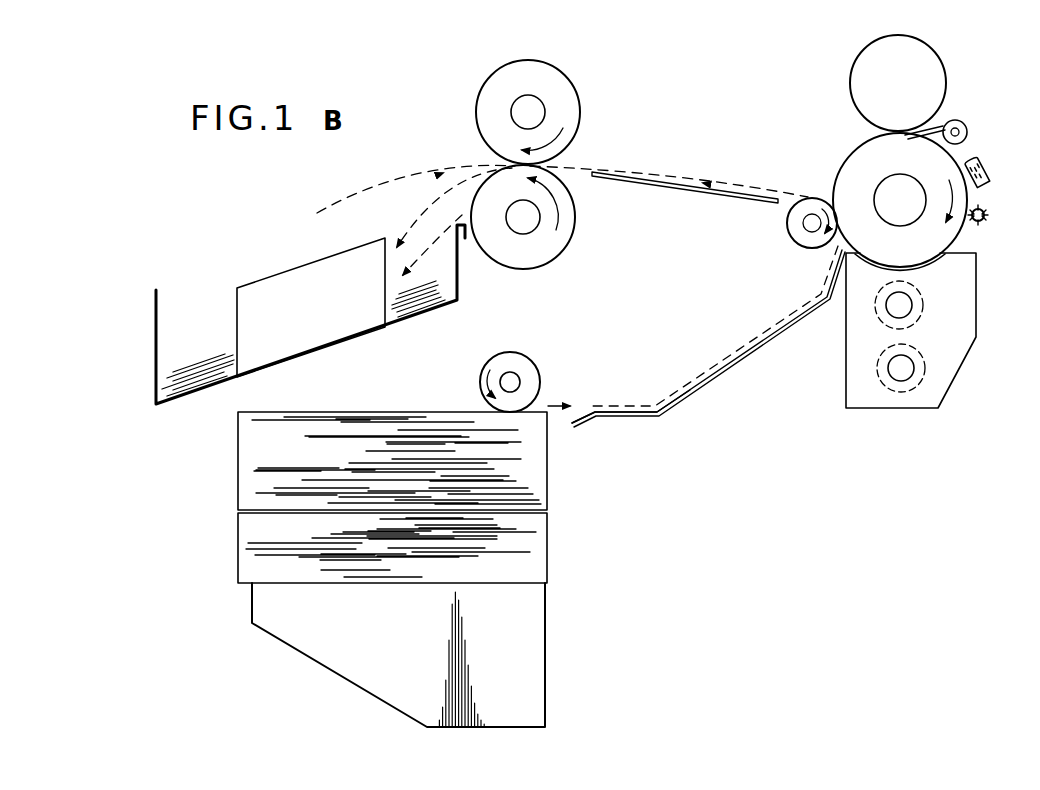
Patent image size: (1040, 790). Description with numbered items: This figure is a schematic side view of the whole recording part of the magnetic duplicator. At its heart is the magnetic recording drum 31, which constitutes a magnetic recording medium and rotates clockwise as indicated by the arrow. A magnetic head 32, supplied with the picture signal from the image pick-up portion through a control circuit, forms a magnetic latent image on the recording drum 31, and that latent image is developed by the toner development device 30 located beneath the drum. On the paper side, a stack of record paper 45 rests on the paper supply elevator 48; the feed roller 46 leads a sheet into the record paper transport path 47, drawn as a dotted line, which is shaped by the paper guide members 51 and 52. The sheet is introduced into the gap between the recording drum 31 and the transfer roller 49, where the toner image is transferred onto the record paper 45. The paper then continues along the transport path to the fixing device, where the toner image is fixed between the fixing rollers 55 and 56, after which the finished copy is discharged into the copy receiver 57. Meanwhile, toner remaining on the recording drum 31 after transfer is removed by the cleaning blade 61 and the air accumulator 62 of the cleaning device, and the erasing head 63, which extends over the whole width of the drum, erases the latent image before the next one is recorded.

The toner development device 30 is at (976, 325).
The magnetic recording drum 31 is at (944, 160).
The magnetic head 32 is at (985, 220).
The record paper 45 is at (545, 411).
The feed roller 46 is at (528, 355).
The record paper transport path 47 is at (708, 368).
The paper supply elevator 48 is at (540, 665).
The transfer roller 49 is at (790, 238).
The paper guide member 51 is at (675, 400).
The paper guide member 52 is at (668, 185).
The fixing roller 55 is at (582, 92).
The fixing roller 56 is at (570, 255).
The copy receiver 57 is at (460, 286).
The cleaning blade 61 is at (963, 122).
The air accumulator 62 is at (942, 80).
The erasing head 63 is at (990, 169).